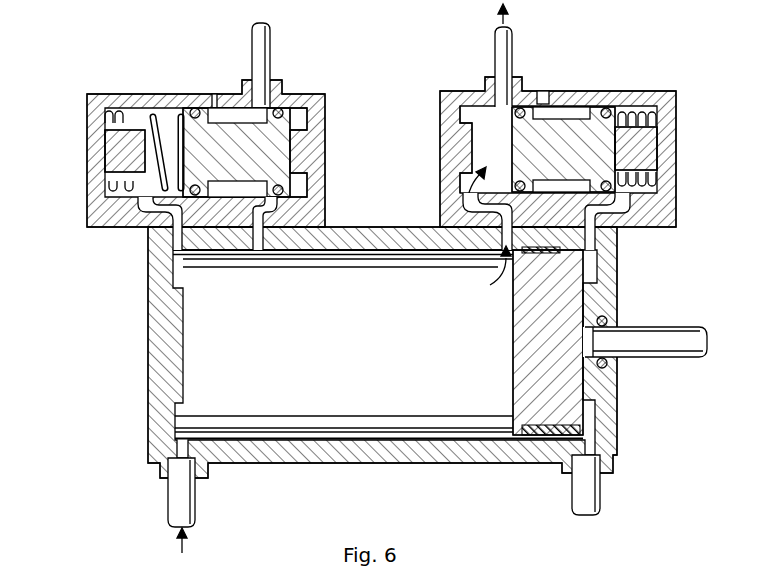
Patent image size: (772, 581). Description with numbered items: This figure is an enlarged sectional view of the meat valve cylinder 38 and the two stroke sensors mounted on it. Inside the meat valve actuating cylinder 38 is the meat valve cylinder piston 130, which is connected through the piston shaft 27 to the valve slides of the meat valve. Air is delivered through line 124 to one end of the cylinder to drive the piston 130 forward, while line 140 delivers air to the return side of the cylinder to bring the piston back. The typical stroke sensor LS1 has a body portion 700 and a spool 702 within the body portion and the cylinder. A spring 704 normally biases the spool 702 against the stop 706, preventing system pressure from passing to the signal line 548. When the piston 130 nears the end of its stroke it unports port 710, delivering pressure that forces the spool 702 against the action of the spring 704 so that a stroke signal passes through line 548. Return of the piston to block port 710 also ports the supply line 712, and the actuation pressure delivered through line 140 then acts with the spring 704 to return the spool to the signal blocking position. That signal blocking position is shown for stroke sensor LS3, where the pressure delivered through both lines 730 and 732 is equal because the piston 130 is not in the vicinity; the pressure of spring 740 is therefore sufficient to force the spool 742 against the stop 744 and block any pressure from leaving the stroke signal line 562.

The meat valve actuating cylinder 38 is at (344, 352).
The meat valve cylinder piston 130 is at (527, 347).
The piston shaft 27 is at (652, 342).
The line 124 is at (197, 507).
The line 140 is at (592, 494).
The stroke sensor LS3 is at (190, 132).
The stroke sensor LS1 is at (693, 60).
The body portion 700 is at (677, 161).
The spool 702 is at (549, 128).
The spring 704 is at (650, 108).
The stop 706 is at (462, 122).
The port 710 is at (503, 232).
The supply line 712 is at (621, 207).
The signal line 548 is at (500, 44).
The spring 740 is at (108, 110).
The spool 742 is at (245, 138).
The stop 744 is at (296, 137).
The line 730 is at (143, 212).
The line 732 is at (257, 247).
The stroke signal line 562 is at (268, 40).